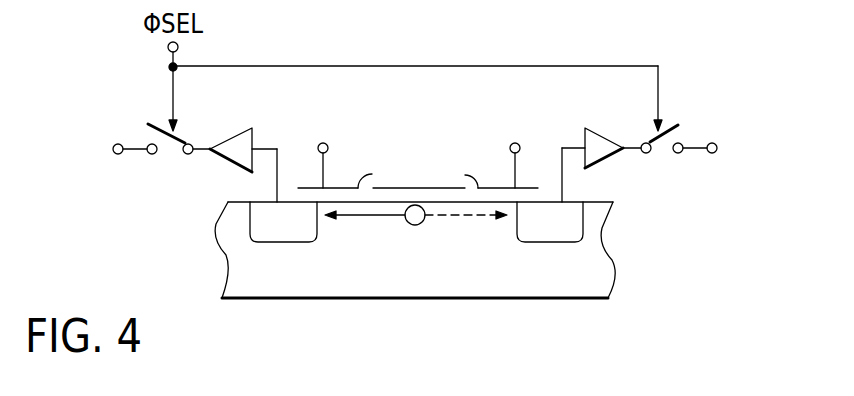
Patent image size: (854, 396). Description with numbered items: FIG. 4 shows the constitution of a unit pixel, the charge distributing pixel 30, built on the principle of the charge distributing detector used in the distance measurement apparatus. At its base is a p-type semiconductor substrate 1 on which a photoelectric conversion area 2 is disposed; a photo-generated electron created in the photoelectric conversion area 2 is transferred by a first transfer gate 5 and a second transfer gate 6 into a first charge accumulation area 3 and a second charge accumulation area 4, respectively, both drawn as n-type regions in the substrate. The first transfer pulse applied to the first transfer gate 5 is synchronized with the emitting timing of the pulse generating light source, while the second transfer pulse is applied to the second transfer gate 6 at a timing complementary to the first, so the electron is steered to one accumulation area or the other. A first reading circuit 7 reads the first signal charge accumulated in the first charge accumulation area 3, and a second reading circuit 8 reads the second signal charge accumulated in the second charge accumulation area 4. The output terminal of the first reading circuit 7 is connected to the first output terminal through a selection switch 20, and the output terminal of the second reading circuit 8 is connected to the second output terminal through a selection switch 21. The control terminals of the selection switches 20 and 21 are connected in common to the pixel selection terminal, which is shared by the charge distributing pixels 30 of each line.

The semiconductor substrate 1 is at (467, 283).
The photoelectric conversion area 2 is at (442, 202).
The first charge accumulation area 3 is at (250, 221).
The second charge accumulation area 4 is at (578, 228).
The first transfer gate 5 is at (340, 196).
The second transfer gate 6 is at (529, 196).
The first reading circuit 7 is at (232, 131).
The second reading circuit 8 is at (601, 132).
The selection switch 20 is at (175, 158).
The selection switch 21 is at (660, 155).
The charge distributing pixel 30 is at (468, 223).